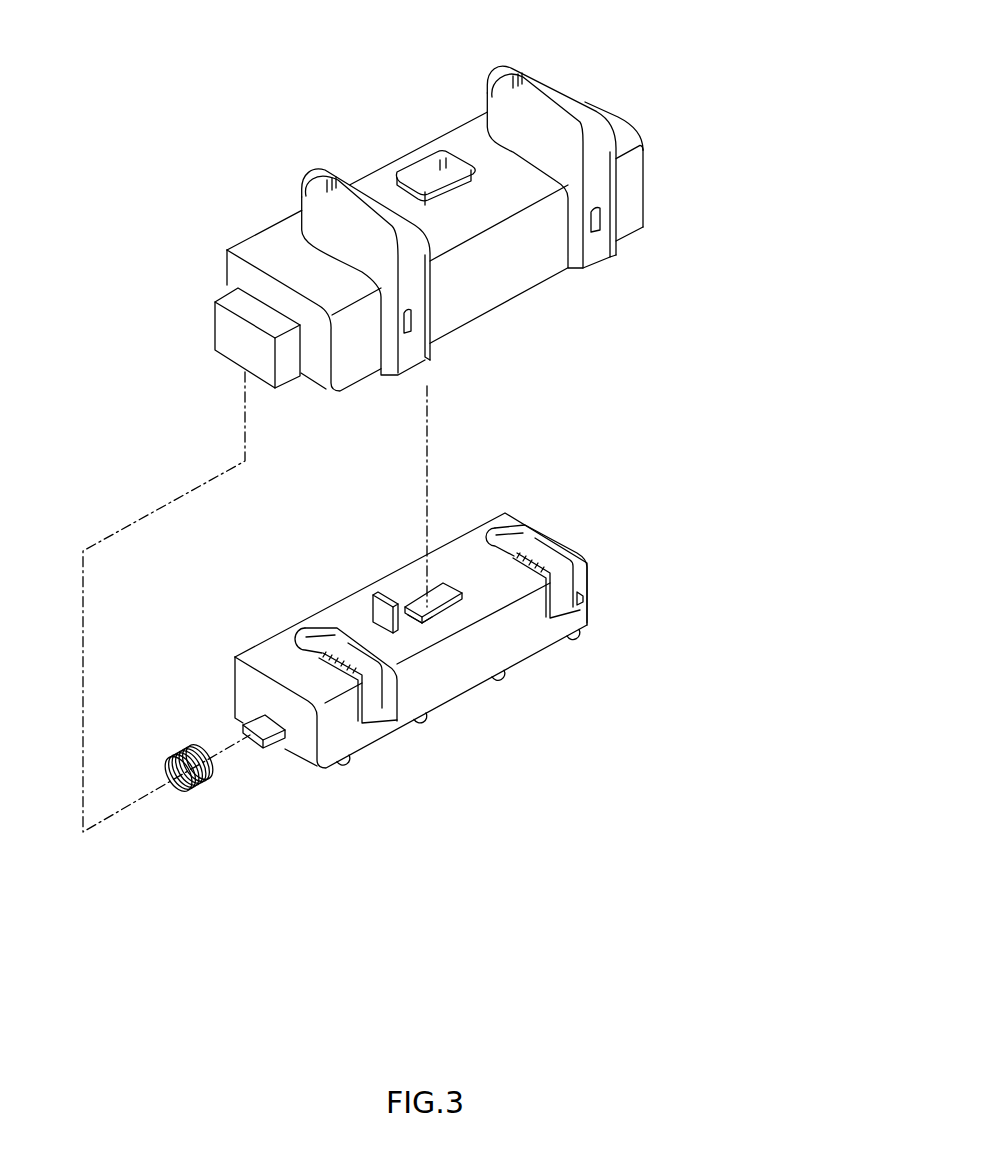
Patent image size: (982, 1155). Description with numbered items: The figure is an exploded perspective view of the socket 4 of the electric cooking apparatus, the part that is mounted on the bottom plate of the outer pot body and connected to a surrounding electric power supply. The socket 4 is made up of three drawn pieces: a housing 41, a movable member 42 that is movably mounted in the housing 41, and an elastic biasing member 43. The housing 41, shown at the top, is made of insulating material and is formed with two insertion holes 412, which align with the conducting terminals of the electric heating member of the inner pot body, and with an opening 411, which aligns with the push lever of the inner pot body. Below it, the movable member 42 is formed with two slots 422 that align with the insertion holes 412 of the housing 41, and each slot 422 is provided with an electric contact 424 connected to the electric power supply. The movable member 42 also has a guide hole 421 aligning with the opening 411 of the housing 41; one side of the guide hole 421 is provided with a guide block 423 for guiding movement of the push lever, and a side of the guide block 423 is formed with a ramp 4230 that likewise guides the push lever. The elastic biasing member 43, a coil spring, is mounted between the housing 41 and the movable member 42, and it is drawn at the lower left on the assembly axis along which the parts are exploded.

The socket 4 is at (469, 435).
The housing 41 is at (272, 235).
The opening 411 is at (423, 170).
The insertion holes 412 is at (557, 110).
The movable member 42 is at (505, 645).
The guide hole 421 is at (445, 600).
The ramp 4230 is at (425, 612).
The guide block 423 is at (385, 612).
The slots 422 is at (318, 643).
The electric contact 424 is at (555, 557).
The elastic biasing member 43 is at (205, 783).